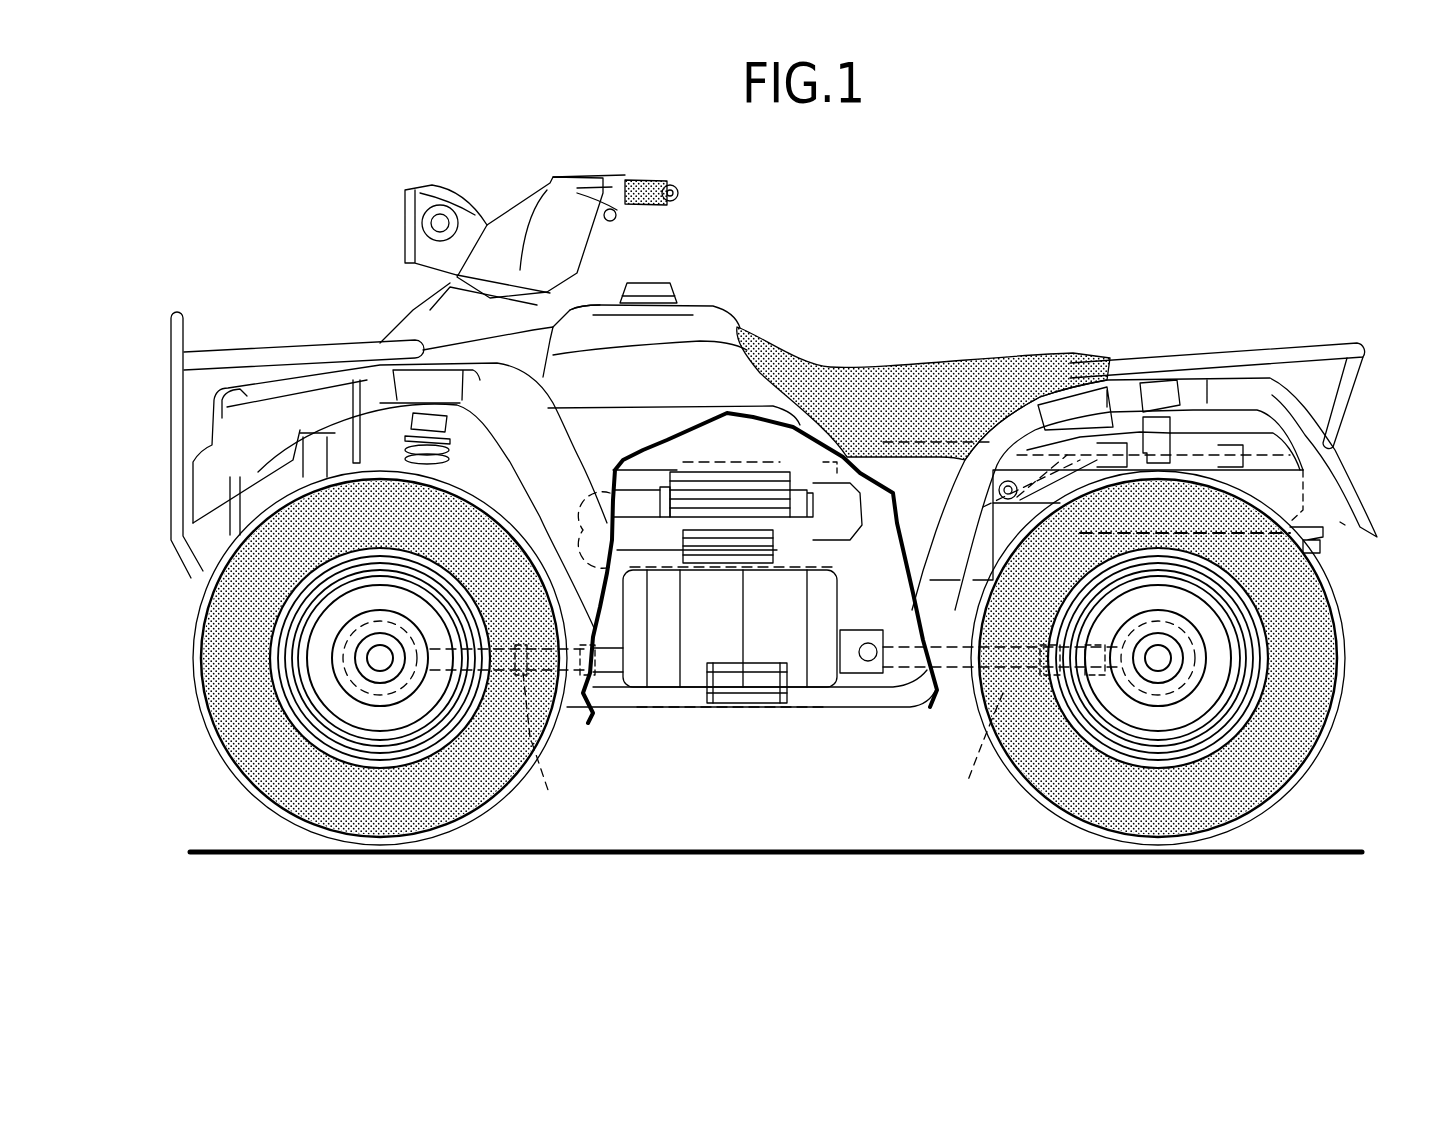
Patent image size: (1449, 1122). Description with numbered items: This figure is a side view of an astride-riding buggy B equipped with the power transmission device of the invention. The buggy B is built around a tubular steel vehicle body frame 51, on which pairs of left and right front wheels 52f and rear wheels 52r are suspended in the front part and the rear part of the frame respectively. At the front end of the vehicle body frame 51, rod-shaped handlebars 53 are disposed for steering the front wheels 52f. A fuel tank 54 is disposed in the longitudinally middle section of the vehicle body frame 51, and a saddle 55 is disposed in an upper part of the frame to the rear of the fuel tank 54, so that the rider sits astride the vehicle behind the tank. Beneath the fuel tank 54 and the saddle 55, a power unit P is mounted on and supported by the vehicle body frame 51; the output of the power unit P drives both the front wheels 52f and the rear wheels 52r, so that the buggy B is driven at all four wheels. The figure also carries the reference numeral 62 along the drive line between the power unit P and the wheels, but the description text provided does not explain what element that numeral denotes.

The astride-riding buggy B is at (893, 268).
The power unit P is at (618, 588).
The vehicle body frame 51 is at (840, 703).
The front wheels 52f is at (243, 730).
The rear wheels 52r is at (1303, 720).
The handlebars 53 is at (657, 183).
The fuel tank 54 is at (707, 320).
The saddle 55 is at (1033, 360).
The drive shaft 62 is at (775, 735).